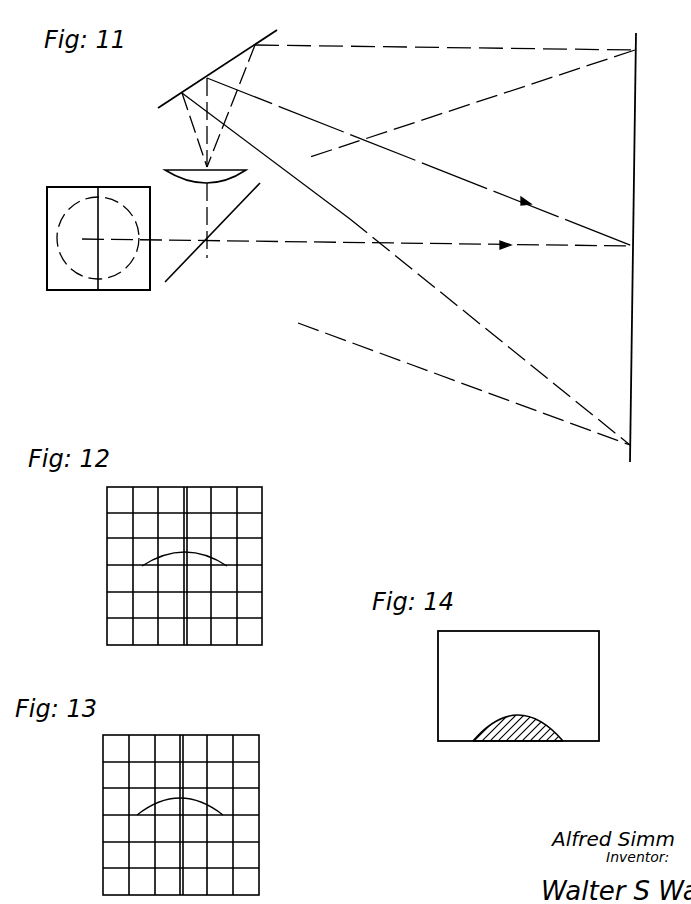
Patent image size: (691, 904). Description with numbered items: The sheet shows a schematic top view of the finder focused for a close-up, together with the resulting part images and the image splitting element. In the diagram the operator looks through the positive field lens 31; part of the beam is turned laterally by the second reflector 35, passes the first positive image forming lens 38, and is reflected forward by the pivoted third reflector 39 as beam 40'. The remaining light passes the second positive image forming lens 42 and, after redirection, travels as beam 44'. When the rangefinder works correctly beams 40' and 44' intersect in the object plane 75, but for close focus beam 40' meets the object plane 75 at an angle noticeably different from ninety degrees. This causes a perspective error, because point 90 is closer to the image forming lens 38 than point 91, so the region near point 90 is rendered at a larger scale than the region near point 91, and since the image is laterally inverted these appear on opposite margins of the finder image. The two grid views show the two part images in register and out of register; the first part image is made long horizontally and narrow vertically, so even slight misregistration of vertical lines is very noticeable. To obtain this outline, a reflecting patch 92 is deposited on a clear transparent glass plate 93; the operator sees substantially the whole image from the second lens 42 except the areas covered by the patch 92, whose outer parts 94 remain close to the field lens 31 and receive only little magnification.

In FIG. 11, the positive field lens 31 is at (46, 268).
In FIG. 11, the second reflector 35 is at (180, 267).
In FIG. 11, the first positive image forming lens 38 is at (178, 168).
In FIG. 11, the third reflector 39 is at (229, 62).
In FIG. 11, the beam 40' is at (421, 162).
In FIG. 11, the second positive image forming lens 42 is at (77, 270).
In FIG. 11, the beam 44' is at (357, 232).
In FIG. 11, the object plane 75 is at (635, 284).
In FIG. 11, the point 90 is at (462, 98).
In FIG. 11, the point 91 is at (422, 274).
In FIG. 14, the reflecting patch 92 is at (493, 740).
In FIG. 14, the clear transparent glass plate 93 is at (446, 661).
In FIG. 14, the outer part of reflecting patch 94 is at (516, 714).